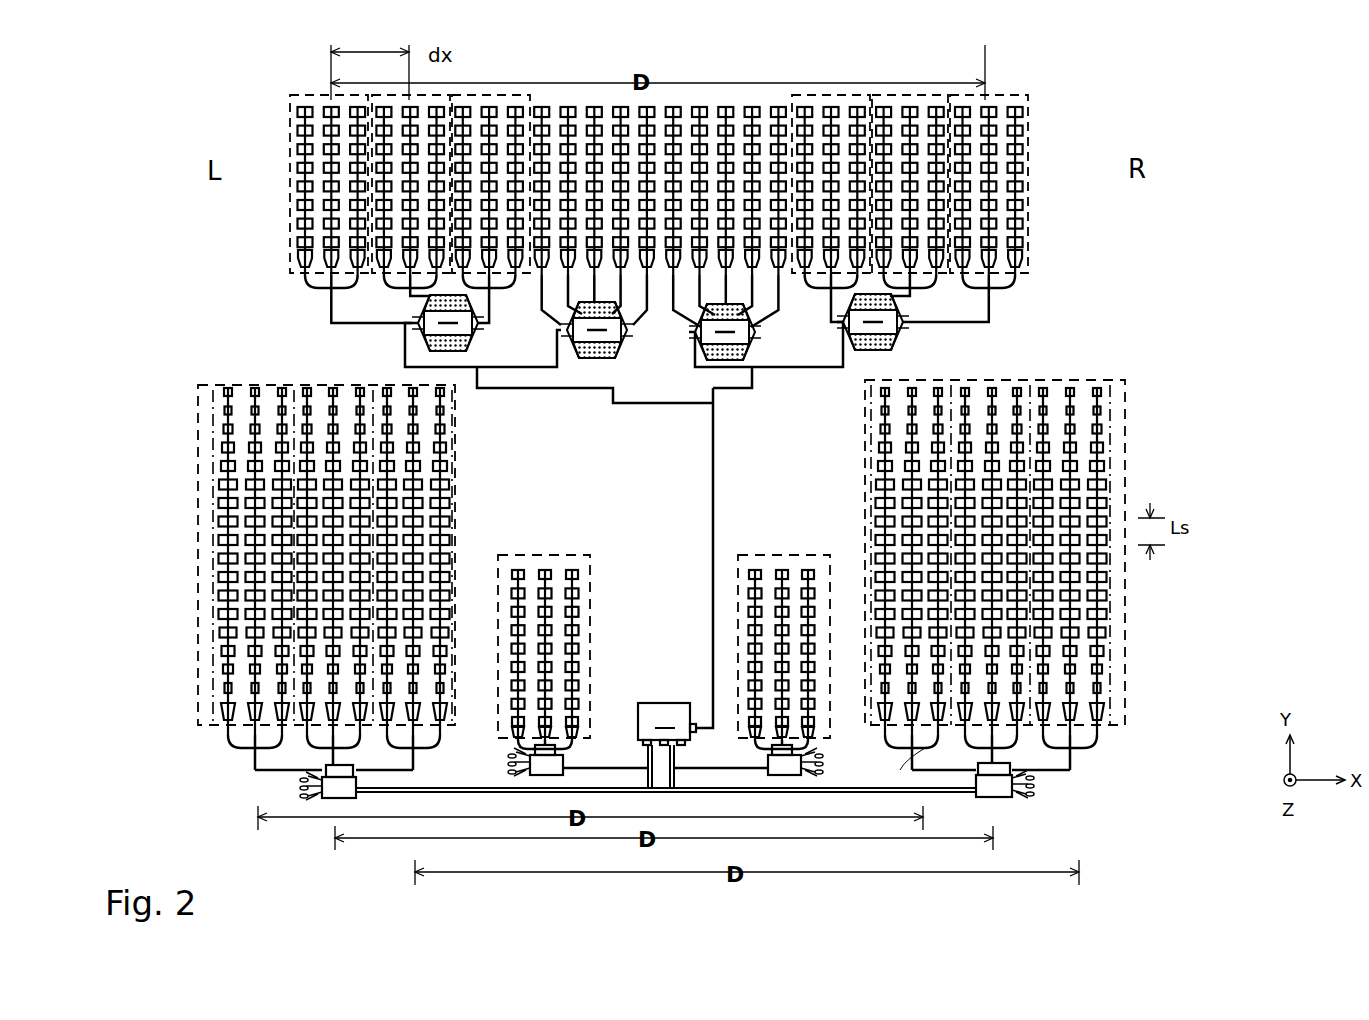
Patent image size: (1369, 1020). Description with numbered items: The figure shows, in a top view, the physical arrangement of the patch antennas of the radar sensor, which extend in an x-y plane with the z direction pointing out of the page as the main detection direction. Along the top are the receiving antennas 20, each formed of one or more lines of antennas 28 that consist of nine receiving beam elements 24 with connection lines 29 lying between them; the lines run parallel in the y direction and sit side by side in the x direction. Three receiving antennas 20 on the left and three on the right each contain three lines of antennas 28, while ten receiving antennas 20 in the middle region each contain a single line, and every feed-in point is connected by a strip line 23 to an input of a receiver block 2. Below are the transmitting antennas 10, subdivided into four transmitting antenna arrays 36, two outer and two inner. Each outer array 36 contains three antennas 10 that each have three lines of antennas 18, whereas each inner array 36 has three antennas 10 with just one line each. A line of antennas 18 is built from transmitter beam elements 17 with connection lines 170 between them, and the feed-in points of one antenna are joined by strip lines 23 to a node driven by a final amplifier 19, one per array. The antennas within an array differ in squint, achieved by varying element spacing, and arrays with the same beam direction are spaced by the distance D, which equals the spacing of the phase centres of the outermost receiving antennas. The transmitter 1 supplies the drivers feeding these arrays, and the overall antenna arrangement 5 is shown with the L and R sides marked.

The transmitter 1 is at (660, 703).
The receiver block 2 is at (472, 342).
The antenna arrangement 5 is at (925, 748).
The transmitting antenna 10 is at (227, 385).
The transmitter beam element 17 is at (1100, 471).
The line of antennas 18 is at (236, 384).
The final amplifier 19 is at (300, 797).
The receiving antenna 20 is at (300, 99).
The strip line 23 is at (540, 400).
The receiving beam element 24 is at (1020, 160).
The line of antennas 28 is at (492, 100).
The connection line 29 is at (1021, 182).
The transmitting antenna array 36 is at (210, 388).
The connection line 170 is at (1122, 478).